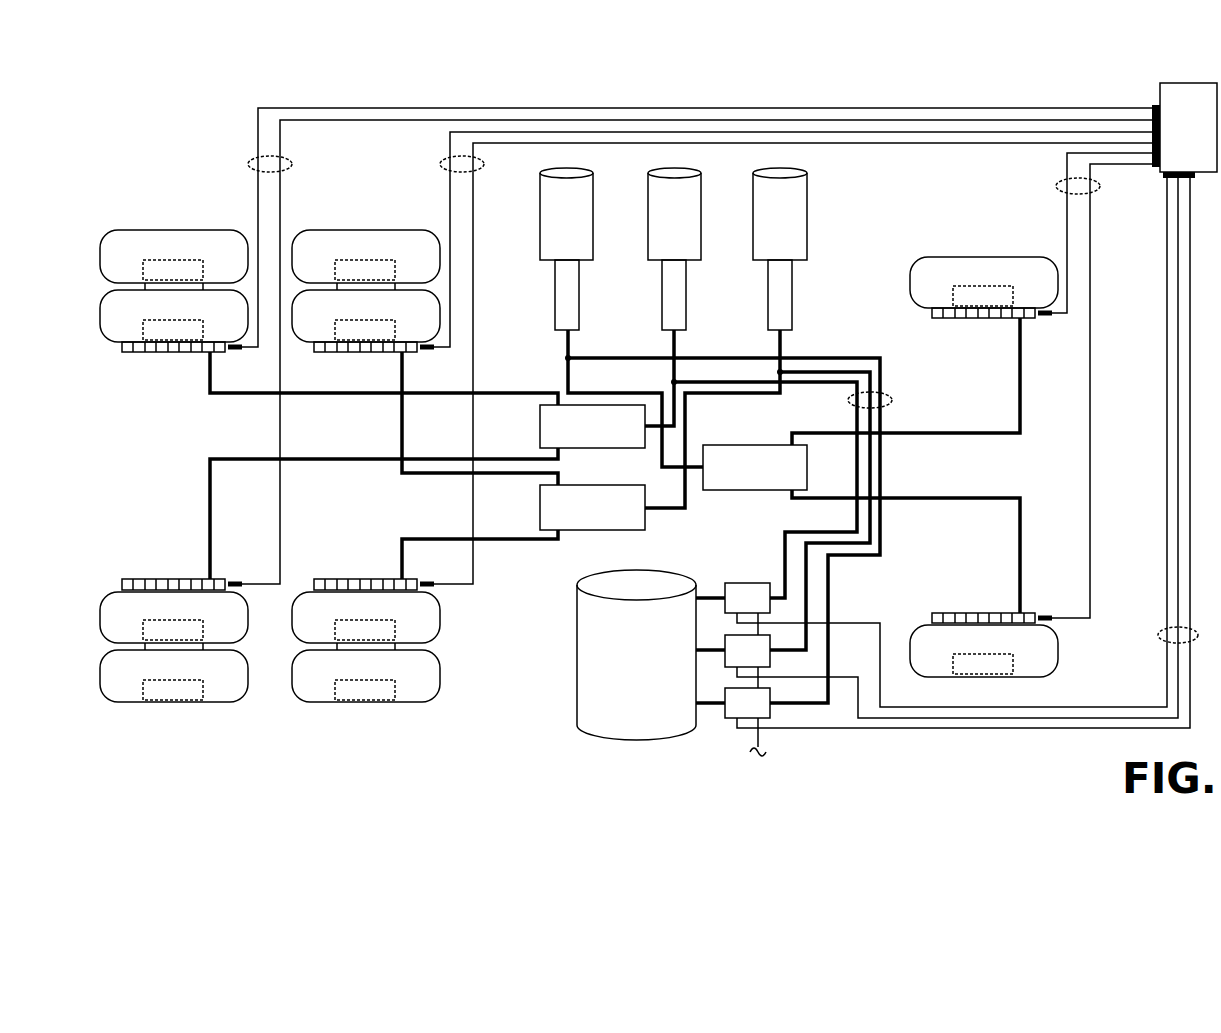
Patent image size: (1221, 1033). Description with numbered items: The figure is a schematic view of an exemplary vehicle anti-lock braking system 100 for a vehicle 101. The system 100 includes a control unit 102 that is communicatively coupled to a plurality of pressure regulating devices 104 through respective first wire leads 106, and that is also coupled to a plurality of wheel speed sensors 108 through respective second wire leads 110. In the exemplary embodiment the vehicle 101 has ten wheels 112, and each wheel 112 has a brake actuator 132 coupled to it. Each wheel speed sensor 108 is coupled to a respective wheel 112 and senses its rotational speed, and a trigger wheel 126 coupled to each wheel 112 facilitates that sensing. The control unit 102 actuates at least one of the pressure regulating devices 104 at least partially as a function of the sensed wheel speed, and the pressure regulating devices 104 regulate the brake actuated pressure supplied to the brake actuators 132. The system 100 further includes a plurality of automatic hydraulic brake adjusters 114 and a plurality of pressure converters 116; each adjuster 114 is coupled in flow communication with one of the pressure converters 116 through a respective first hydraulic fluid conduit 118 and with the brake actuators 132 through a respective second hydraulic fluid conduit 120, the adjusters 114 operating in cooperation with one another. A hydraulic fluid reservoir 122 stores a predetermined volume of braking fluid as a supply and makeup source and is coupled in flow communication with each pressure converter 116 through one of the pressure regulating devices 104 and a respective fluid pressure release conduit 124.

The vehicle anti-lock braking system 100 is at (173, 113).
The vehicle 101 is at (577, 465).
The control unit 102 is at (1184, 130).
The pressure regulating device 104 is at (747, 669).
The first wire lead 106 is at (1166, 636).
The wheel speed sensor 108 is at (232, 356).
The second wire lead 110 is at (258, 166).
The wheel 112 is at (579, 466).
The automatic hydraulic brake adjuster 114 is at (673, 467).
The pressure converter 116 is at (673, 249).
The first hydraulic fluid conduit 118 is at (563, 347).
The second hydraulic fluid conduit 120 is at (378, 396).
The hydraulic fluid reservoir 122 is at (651, 655).
The fluid pressure release conduit 124 is at (858, 398).
The trigger wheel 126 is at (152, 356).
The brake actuator 132 is at (578, 480).